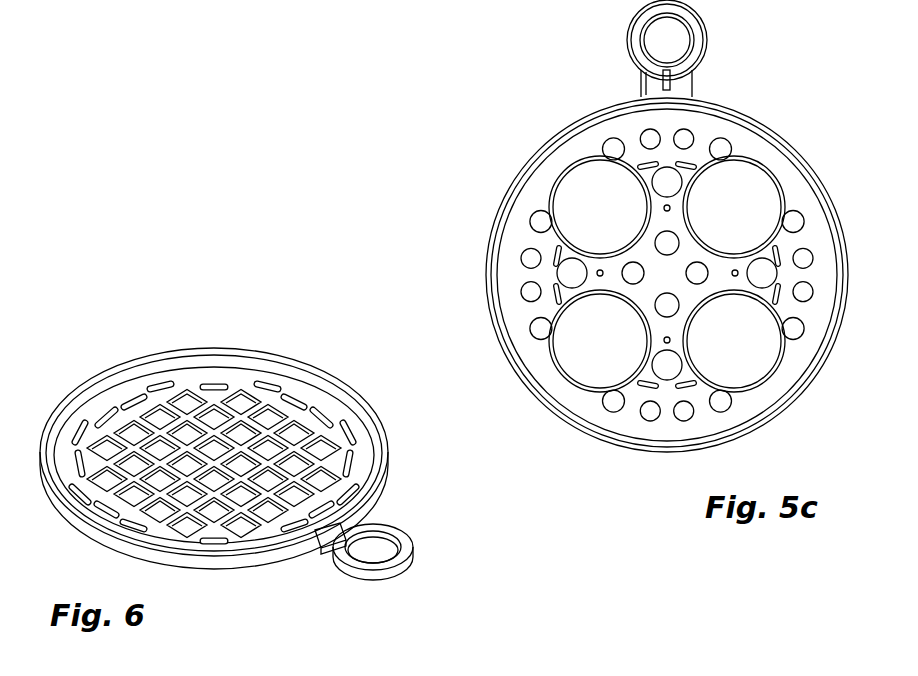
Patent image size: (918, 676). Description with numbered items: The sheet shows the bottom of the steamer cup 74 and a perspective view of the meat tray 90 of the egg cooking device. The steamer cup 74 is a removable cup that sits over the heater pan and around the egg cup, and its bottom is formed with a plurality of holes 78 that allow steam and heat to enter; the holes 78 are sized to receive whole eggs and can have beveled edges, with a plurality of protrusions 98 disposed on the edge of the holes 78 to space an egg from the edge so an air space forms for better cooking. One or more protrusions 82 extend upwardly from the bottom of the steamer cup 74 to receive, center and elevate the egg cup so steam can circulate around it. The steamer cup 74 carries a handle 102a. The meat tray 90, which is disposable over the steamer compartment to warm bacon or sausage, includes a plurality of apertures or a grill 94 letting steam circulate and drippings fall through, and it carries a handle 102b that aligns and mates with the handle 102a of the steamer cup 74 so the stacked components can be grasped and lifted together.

In FIG. 5c, the steamer cup 74 is at (548, 413).
In FIG. 5c, the holes 78 is at (548, 195).
In FIG. 5c, the protrusions 82 is at (552, 293).
In FIG. 5c, the protrusions 98 is at (560, 177).
In FIG. 5c, the handle 102a is at (627, 42).
In FIG. 6, the meat tray 90 is at (287, 563).
In FIG. 6, the grill 94 is at (190, 403).
In FIG. 6, the handle 102b is at (408, 530).